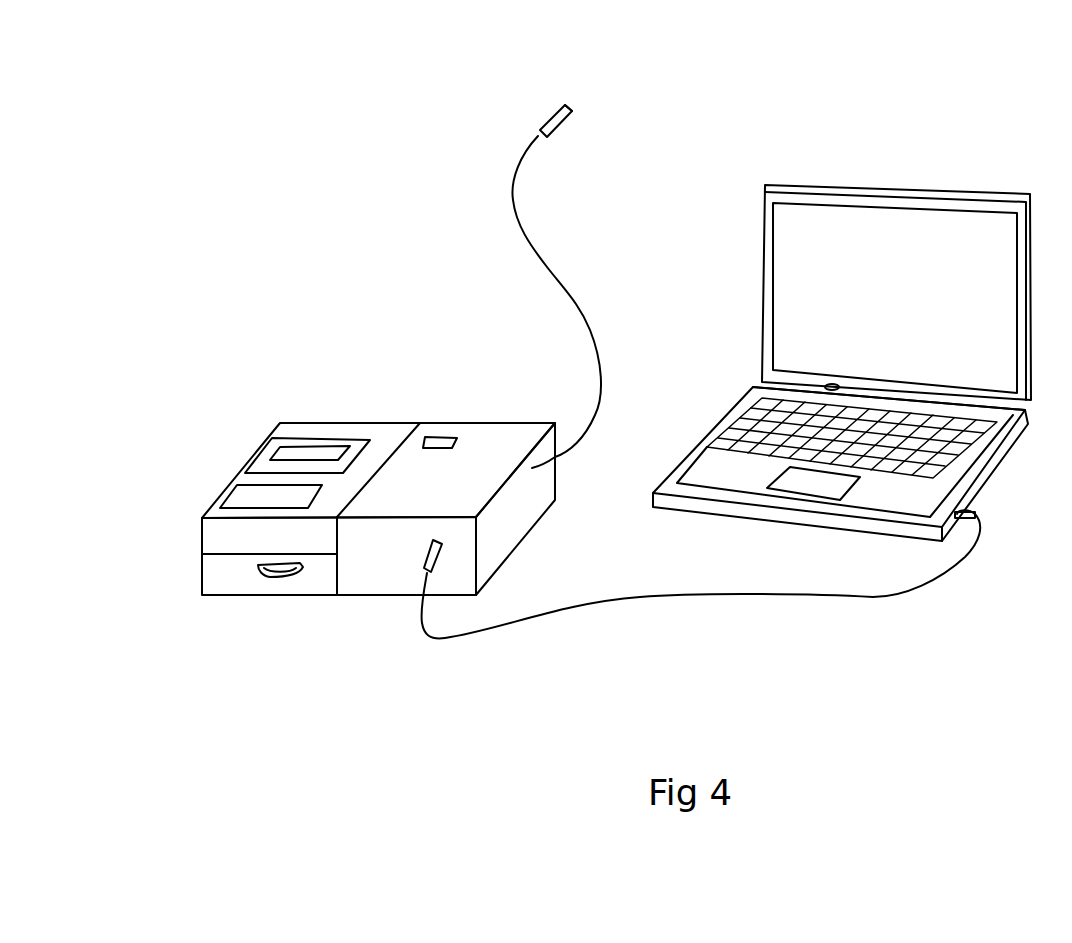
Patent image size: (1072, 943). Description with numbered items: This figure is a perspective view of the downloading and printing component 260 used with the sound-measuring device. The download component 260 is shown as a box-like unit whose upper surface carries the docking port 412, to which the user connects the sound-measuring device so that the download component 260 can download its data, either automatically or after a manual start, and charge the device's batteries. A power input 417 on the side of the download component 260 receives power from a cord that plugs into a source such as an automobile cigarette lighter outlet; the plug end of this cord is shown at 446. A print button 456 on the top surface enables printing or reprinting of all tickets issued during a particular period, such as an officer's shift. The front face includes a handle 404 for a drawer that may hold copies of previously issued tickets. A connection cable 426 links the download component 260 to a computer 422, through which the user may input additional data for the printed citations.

The docking port 412 is at (226, 488).
The download component 260 is at (290, 440).
The print button 456 is at (447, 437).
The power input 417 is at (545, 470).
The drawer handle 404 is at (268, 578).
The power cable connector 446 is at (543, 122).
The computer 422 is at (928, 258).
The connection cable 426 is at (966, 564).